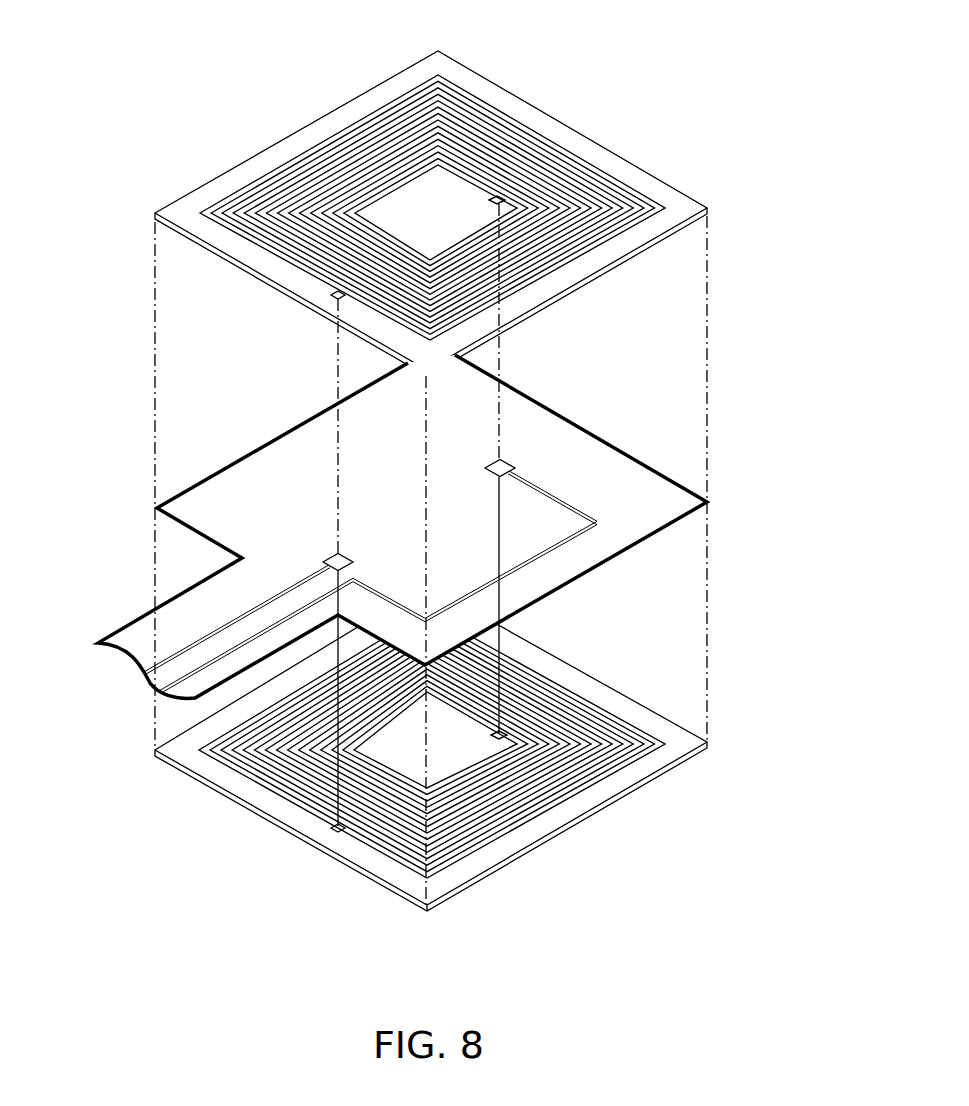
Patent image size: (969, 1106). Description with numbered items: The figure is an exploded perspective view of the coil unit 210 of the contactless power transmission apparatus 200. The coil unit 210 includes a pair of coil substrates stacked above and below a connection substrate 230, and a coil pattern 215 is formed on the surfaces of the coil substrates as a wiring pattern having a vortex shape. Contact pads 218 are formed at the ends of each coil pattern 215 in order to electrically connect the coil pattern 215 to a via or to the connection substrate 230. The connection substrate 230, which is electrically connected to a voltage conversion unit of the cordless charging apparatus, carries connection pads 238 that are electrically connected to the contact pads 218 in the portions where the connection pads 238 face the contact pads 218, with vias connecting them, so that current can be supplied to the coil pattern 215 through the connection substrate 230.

The contactless power transmission apparatus 200 is at (474, 471).
The coil unit 210 is at (720, 207).
The coil pattern 215 is at (530, 127).
The contact pad 218 is at (333, 833).
The connection substrate 230 is at (670, 463).
The connection pad 238 is at (495, 458).